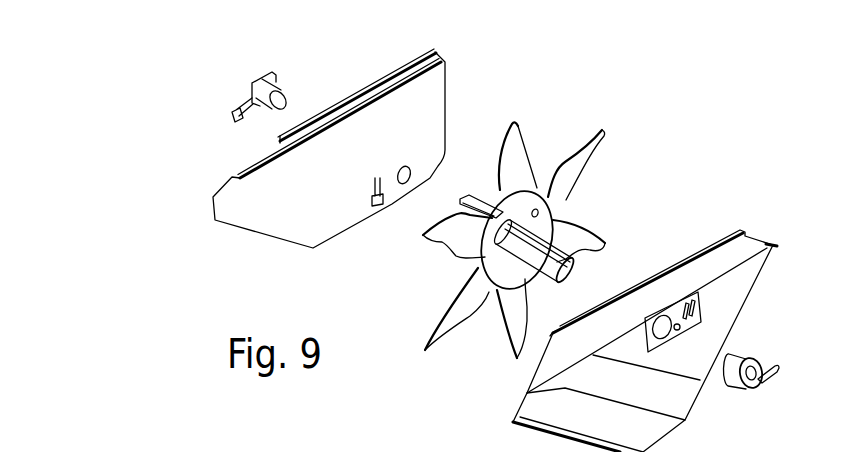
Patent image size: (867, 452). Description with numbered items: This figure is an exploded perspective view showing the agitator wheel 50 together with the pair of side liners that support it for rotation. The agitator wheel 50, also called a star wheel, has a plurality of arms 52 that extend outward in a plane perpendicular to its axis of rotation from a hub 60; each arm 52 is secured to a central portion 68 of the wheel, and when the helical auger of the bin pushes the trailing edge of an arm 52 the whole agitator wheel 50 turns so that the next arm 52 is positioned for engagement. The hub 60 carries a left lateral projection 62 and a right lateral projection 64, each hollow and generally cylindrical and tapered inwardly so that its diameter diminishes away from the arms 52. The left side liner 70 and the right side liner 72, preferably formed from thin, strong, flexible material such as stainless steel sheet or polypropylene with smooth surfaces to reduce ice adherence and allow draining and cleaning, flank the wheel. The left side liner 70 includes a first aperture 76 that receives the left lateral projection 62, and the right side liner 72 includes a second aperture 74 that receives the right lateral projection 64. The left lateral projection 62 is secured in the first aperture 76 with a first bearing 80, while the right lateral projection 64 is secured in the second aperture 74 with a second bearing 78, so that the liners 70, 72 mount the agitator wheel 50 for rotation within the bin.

The agitator wheel 50 is at (495, 287).
The arms 52 is at (531, 188).
The hub 60 is at (575, 247).
The left lateral projection 62 is at (478, 200).
The right lateral projection 64 is at (560, 237).
The central portion 68 is at (486, 258).
The left side liner 70 is at (295, 205).
The right side liner 72 is at (723, 310).
The second aperture 74 is at (658, 313).
The first aperture 76 is at (403, 167).
The second bearing 78 is at (777, 375).
The first bearing 80 is at (240, 112).